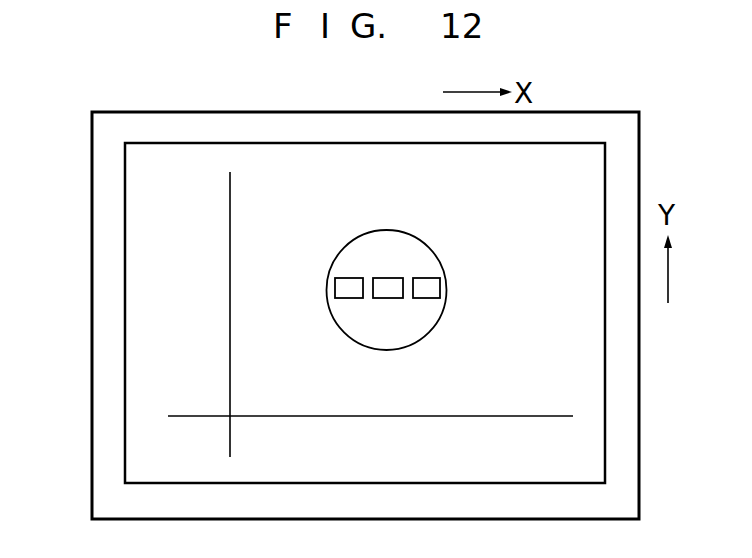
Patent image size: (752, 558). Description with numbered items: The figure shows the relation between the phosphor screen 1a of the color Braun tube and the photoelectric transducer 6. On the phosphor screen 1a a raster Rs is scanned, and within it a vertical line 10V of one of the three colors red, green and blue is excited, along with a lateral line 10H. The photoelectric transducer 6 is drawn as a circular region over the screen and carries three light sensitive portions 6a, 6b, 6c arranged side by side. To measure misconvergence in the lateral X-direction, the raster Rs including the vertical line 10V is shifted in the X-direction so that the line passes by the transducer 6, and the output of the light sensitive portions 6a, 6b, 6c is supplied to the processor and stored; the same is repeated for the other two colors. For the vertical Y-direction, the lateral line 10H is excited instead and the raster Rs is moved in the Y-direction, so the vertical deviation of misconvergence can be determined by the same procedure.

The phosphor screen 1a is at (625, 488).
The raster Rs is at (124, 348).
The vertical line 10V is at (230, 178).
The lateral line 10H is at (553, 416).
The photoelectric transducer 6 is at (400, 240).
The light sensitive portion 6a is at (349, 298).
The light sensitive portion 6b is at (388, 298).
The light sensitive portion 6c is at (427, 298).